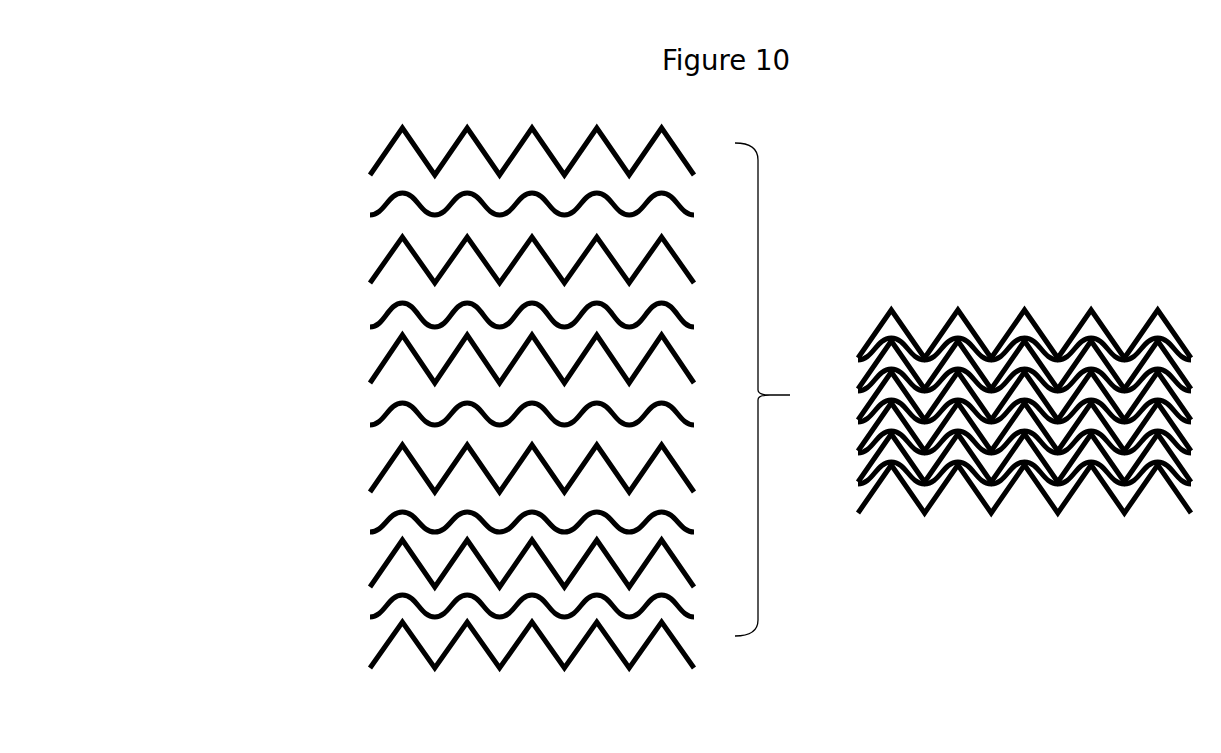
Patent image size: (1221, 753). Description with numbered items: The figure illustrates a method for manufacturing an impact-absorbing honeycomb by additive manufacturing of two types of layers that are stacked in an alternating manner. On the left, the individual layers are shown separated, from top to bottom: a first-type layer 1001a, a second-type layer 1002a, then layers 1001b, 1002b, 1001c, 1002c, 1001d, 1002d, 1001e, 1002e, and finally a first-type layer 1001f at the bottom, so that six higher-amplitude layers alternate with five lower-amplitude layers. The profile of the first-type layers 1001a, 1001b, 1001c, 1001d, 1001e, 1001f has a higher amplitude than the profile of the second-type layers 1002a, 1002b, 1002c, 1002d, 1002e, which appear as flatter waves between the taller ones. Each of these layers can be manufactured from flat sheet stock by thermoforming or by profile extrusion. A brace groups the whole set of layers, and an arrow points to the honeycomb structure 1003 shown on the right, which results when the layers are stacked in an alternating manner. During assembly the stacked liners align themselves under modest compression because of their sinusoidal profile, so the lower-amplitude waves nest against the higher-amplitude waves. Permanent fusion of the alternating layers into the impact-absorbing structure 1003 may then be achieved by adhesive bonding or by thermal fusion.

The first higher-amplitude layer 1001a is at (370, 153).
The first lower-amplitude layer 1002a is at (368, 200).
The second higher-amplitude layer 1001b is at (370, 261).
The second lower-amplitude layer 1002b is at (368, 312).
The third higher-amplitude layer 1001c is at (370, 368).
The third lower-amplitude layer 1002c is at (368, 415).
The fourth higher-amplitude layer 1001d is at (370, 471).
The fourth lower-amplitude layer 1002d is at (368, 519).
The fifth higher-amplitude layer 1001e is at (370, 566).
The fifth lower-amplitude layer 1002e is at (368, 606).
The sixth higher-amplitude layer 1001f is at (370, 655).
The honeycomb structure 1003 is at (1053, 292).